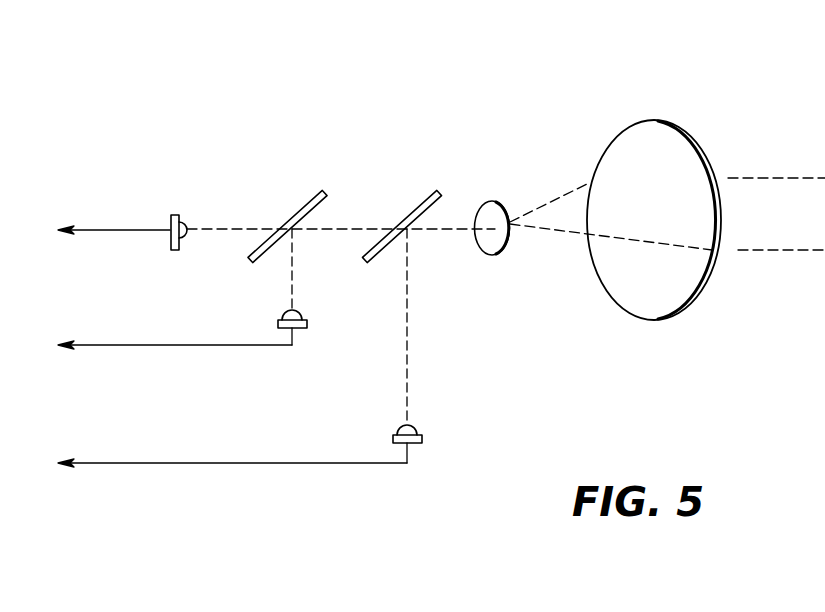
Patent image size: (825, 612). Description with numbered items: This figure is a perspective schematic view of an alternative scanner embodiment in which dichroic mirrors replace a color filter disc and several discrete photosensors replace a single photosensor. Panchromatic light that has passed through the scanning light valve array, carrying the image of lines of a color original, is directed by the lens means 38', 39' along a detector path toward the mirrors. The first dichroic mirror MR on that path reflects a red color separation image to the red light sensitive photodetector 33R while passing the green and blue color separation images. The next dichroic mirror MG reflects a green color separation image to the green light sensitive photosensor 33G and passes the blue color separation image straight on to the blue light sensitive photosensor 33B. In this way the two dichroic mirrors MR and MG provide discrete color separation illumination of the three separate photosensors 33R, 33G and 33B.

The photosensor 33B is at (170, 238).
The photosensor 33G is at (307, 323).
The photodetector 33R is at (422, 437).
The dichroic mirror MG is at (300, 197).
The dichroic mirror MR is at (415, 197).
The lens means 39' is at (489, 215).
The lens means 38' is at (654, 204).